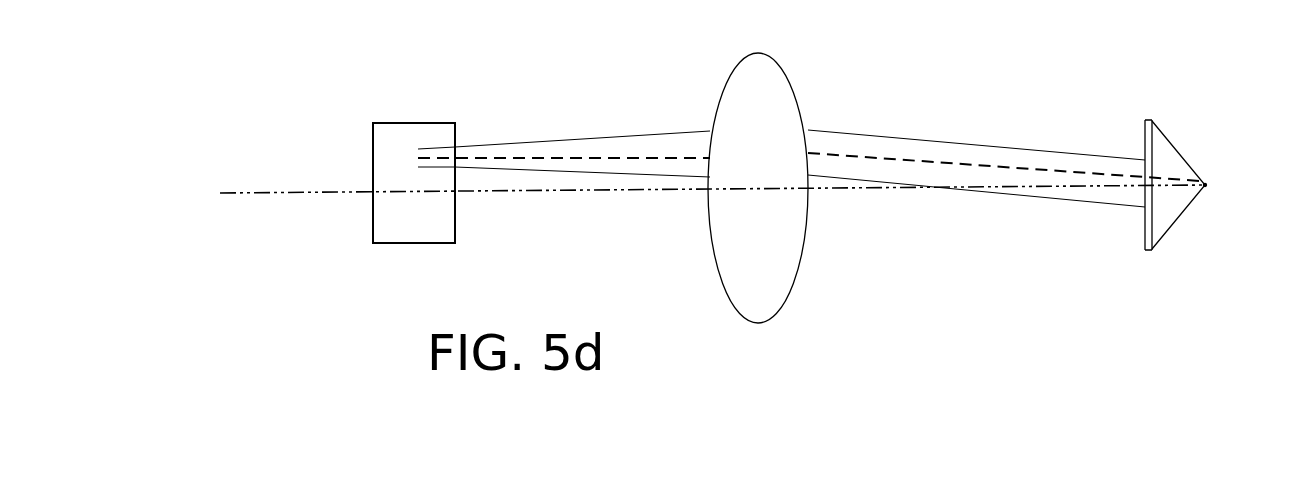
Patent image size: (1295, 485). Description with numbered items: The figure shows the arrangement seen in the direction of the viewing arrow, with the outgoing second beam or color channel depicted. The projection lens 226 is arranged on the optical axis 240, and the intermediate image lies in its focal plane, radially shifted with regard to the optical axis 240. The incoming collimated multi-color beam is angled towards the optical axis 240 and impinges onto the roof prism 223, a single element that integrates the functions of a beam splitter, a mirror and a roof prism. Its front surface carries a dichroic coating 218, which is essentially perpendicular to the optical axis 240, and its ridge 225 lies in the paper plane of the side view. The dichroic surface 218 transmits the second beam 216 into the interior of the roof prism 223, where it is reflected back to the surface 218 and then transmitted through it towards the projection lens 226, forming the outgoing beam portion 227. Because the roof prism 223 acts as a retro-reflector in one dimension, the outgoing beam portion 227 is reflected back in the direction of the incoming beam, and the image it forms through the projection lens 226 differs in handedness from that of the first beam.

The optical axis 240 is at (688, 195).
The outgoing beam portion 227 is at (597, 152).
The projection lens 226 is at (763, 258).
The dichroic coating 218 is at (1145, 225).
The second beam 216 is at (1167, 190).
The roof prism 223 is at (1175, 158).
The ridge 225 is at (1205, 185).